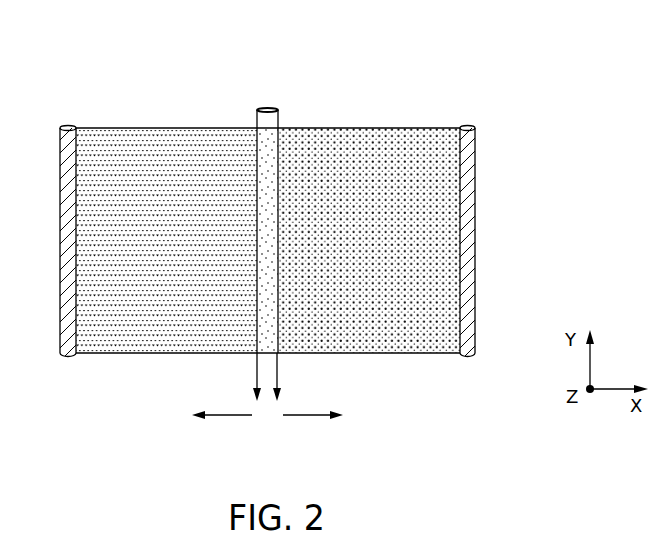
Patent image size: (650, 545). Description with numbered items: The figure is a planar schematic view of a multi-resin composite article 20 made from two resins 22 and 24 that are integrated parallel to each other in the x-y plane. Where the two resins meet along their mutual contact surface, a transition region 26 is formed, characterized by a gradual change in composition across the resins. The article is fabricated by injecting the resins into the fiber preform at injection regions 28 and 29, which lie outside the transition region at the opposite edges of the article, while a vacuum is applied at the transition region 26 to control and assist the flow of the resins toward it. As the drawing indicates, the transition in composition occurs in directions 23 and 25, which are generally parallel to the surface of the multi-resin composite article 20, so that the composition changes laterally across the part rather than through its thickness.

The multi-resin composite article 20 is at (286, 230).
The resin 22 is at (130, 322).
The direction 23 is at (303, 416).
The resin 24 is at (405, 320).
The direction 25 is at (232, 416).
The transition region 26 is at (266, 107).
The injection region 28 is at (64, 250).
The injection region 29 is at (471, 245).